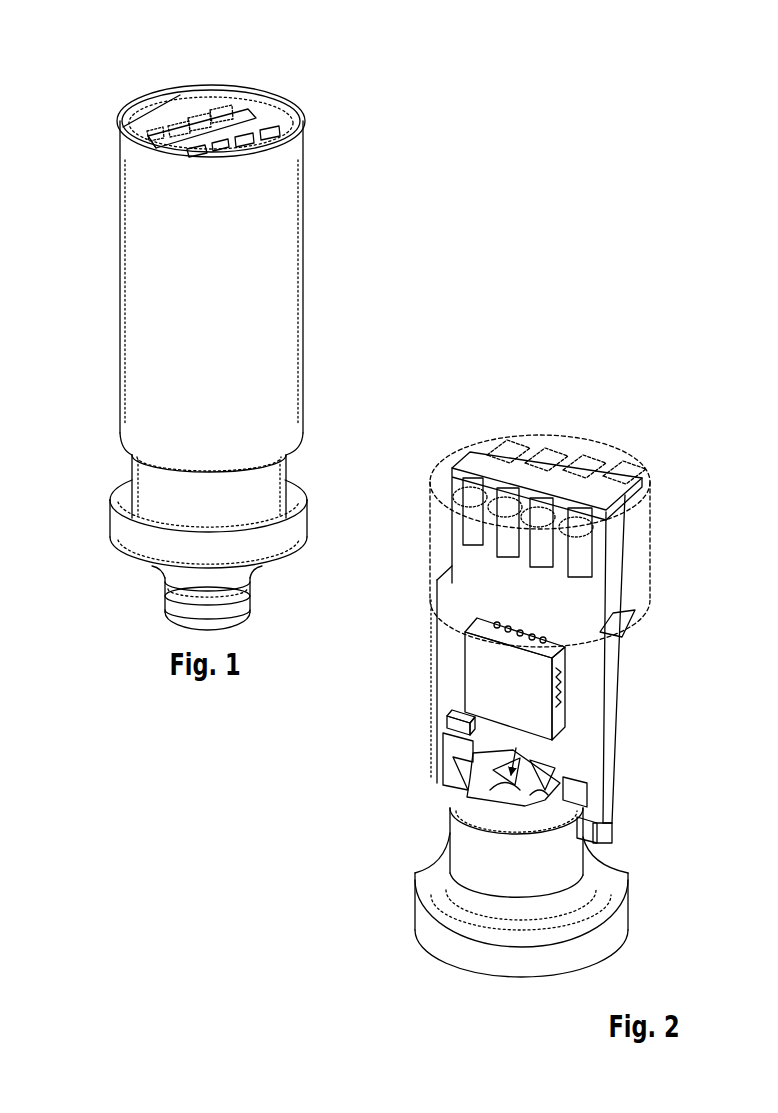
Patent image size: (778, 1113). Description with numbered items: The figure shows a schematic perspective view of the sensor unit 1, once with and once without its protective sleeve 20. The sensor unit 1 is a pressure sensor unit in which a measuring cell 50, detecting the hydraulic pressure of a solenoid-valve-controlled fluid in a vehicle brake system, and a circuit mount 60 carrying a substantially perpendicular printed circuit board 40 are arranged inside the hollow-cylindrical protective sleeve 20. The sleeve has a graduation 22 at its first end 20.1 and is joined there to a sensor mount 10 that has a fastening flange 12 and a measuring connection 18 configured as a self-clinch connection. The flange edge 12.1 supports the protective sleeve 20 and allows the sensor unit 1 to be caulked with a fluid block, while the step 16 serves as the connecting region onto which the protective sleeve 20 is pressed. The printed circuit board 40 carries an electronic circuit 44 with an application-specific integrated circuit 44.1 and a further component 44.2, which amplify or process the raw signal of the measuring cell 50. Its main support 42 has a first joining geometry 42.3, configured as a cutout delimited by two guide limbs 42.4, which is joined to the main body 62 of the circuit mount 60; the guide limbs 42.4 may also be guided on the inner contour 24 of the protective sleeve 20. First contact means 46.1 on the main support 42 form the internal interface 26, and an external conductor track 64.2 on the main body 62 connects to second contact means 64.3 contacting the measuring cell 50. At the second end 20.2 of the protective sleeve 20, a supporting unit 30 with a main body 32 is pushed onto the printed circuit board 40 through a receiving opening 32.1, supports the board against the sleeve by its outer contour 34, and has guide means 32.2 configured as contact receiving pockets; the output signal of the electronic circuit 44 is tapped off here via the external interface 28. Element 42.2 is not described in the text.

In FIG. 1, the sensor unit 1 is at (96, 72).
In FIG. 2, the sensor unit 1 is at (563, 383).
In FIG. 1, the sensor mount 10 is at (303, 562).
In FIG. 2, the sensor mount 10 is at (403, 943).
In FIG. 1, the fastening flange 12 is at (122, 535).
In FIG. 2, the fastening flange 12 is at (447, 945).
In FIG. 1, the flange edge 12.1 is at (118, 498).
In FIG. 2, the flange edge 12.1 is at (503, 937).
In FIG. 2, the step 16 is at (450, 875).
In FIG. 1, the measuring connection 18 is at (170, 605).
In FIG. 2, the measuring connection 18 is at (523, 977).
In FIG. 1, the protective sleeve 20 is at (278, 265).
In FIG. 1, the first end of the protective sleeve 20.1 is at (305, 493).
In FIG. 1, the second end of the protective sleeve 20.2 is at (343, 167).
In FIG. 1, the graduation 22 is at (288, 475).
In FIG. 1, the inner contour of the protective sleeve 24 is at (290, 115).
In FIG. 2, the internal interface 26 is at (427, 800).
In FIG. 2, the external interface 28 is at (556, 453).
In FIG. 1, the supporting unit 30 is at (305, 80).
In FIG. 2, the supporting unit 30 is at (508, 416).
In FIG. 1, the main body of the supporting unit 32 is at (185, 107).
In FIG. 2, the main body of the supporting unit 32 is at (600, 450).
In FIG. 2, the receiving opening 32.1 is at (470, 455).
In FIG. 2, the guide means 32.2 is at (622, 472).
In FIG. 2, the outer contour of the supporting unit 34 is at (430, 498).
In FIG. 1, the printed circuit board 40 is at (130, 85).
In FIG. 2, the printed circuit board 40 is at (428, 705).
In FIG. 2, the main support 42 is at (452, 655).
In FIG. 2, the frame tab 42.2 is at (633, 612).
In FIG. 2, the first joining geometry 42.3 is at (533, 832).
In FIG. 2, the guide limb 42.4 is at (604, 812).
In FIG. 2, the electronic circuit 44 is at (640, 642).
In FIG. 2, the application-specific integrated circuit 44.1 is at (558, 688).
In FIG. 2, the electronic and/or electrical component 44.2 is at (445, 727).
In FIG. 2, the first contact means 46.1 is at (448, 745).
In FIG. 2, the measuring cell 50 is at (546, 765).
In FIG. 2, the circuit mount 60 is at (414, 837).
In FIG. 2, the main body of the circuit mount 62 is at (547, 883).
In FIG. 2, the external conductor track 64.2 is at (590, 845).
In FIG. 2, the second contact means 64.3 is at (512, 832).